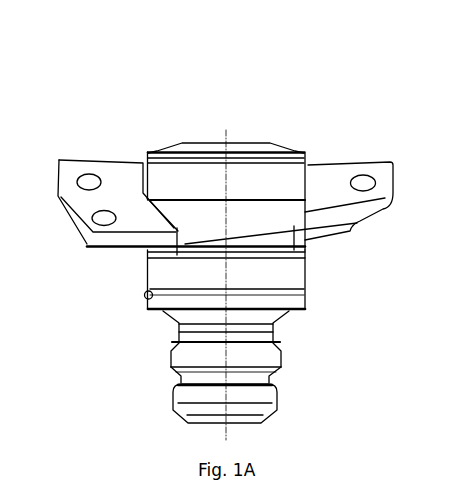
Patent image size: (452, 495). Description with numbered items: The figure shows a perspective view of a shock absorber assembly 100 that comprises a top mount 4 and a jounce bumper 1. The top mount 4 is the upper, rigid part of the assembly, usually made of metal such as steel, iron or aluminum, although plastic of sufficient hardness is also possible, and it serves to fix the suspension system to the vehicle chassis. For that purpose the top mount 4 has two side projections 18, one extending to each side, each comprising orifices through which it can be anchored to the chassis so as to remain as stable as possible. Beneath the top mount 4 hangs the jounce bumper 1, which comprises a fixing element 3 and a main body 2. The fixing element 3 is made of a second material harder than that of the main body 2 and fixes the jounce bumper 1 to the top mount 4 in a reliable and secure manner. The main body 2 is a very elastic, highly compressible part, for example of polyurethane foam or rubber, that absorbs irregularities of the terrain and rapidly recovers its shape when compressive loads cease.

The shock absorber assembly 100 is at (223, 250).
The side projections 18 is at (77, 146).
The top mount 4 is at (252, 170).
The fixing element 3 is at (287, 298).
The main body 2 is at (263, 360).
The jounce bumper 1 is at (138, 340).